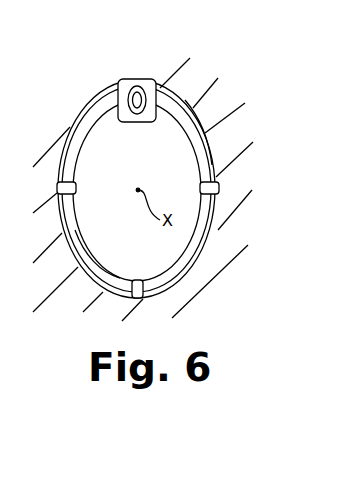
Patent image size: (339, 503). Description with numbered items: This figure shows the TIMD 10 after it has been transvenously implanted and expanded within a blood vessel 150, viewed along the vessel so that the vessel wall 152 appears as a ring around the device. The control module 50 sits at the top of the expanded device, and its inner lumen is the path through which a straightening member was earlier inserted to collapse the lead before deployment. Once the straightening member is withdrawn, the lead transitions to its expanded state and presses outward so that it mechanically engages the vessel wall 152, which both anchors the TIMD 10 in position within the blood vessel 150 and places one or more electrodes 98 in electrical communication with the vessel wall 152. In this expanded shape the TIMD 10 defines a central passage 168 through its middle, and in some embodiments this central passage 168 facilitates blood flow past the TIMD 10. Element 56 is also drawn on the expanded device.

The TIMD 10 is at (165, 64).
The blood vessel 150 is at (186, 90).
The vessel wall 152 is at (194, 126).
The inner wall 56 is at (96, 141).
The central passage 168 is at (106, 236).
The control module 50 is at (137, 76).
The electrodes 98 is at (219, 187).